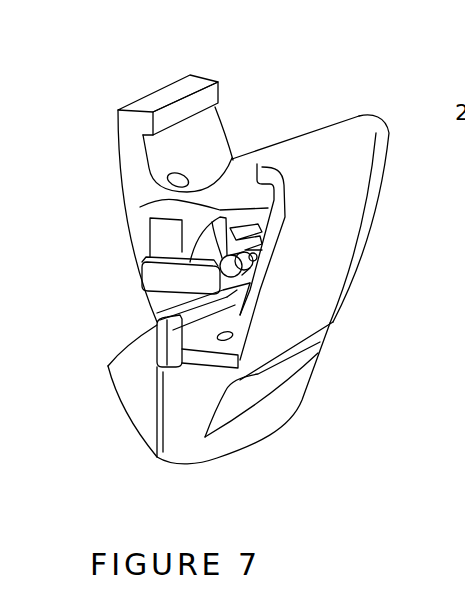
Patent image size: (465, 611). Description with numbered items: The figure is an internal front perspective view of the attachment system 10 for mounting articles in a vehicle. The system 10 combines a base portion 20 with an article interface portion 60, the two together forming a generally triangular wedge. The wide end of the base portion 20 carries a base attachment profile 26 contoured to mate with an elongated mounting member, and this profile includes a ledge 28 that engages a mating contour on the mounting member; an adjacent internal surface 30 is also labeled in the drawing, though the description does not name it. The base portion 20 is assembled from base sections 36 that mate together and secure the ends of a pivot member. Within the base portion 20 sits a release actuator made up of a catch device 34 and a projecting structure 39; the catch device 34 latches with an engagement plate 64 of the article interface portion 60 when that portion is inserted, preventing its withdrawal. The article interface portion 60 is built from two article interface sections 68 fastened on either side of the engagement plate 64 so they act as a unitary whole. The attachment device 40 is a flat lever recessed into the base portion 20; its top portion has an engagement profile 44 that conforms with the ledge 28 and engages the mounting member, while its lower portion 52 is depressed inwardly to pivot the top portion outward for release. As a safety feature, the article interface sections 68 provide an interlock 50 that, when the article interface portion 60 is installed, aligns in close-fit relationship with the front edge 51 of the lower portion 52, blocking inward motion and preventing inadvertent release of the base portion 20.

The attachment system 10 is at (120, 42).
The base portion 20 is at (385, 98).
The base attachment profile 26 is at (242, 107).
The ledge 28 is at (163, 118).
The back wall surface 30 is at (234, 157).
The catch device 34 is at (155, 282).
The base sections 36 is at (132, 158).
The projecting structure 39 is at (170, 251).
The attachment device 40 is at (334, 230).
The engagement profile 44 is at (320, 133).
The interlock 50 is at (157, 343).
The front edge 51 is at (108, 364).
The lower portion 52 is at (205, 357).
The article interface portion 60 is at (133, 470).
The engagement plate 64 is at (170, 218).
The article interface sections 68 is at (135, 410).